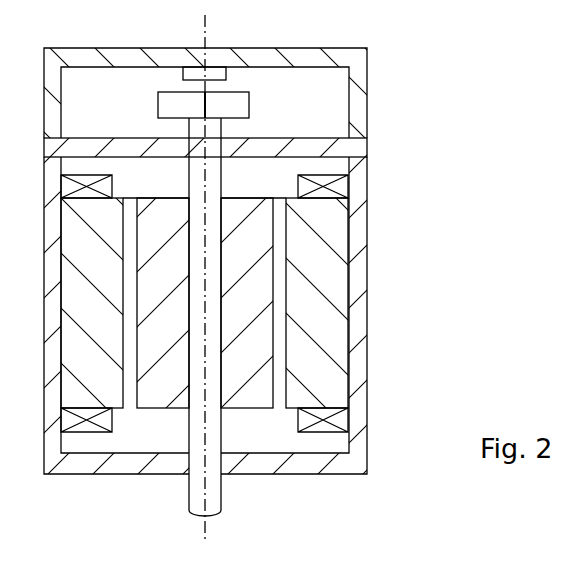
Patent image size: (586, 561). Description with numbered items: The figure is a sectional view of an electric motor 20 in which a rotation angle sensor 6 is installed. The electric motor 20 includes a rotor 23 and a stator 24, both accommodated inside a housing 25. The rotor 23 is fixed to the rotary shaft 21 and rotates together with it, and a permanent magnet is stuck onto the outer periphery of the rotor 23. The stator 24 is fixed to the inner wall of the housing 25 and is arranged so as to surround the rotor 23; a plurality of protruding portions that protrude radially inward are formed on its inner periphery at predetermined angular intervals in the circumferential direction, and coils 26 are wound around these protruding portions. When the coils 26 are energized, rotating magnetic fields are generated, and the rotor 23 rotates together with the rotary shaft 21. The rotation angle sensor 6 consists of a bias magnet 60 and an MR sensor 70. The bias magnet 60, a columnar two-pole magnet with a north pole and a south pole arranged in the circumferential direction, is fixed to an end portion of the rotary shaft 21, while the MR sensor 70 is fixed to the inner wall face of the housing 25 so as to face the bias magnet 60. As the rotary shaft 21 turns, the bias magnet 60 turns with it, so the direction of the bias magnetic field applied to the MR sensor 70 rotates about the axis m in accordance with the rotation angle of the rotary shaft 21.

The rotation angle sensor 6 is at (265, 78).
The electric motor 20 is at (386, 220).
The rotary shaft 21 is at (187, 490).
The rotor 23 is at (236, 410).
The stator 24 is at (288, 410).
The housing 25 is at (367, 130).
The coils 26 is at (323, 432).
The bias magnet 60 is at (249, 107).
The MR sensor 70 is at (231, 66).
The axis m is at (205, 517).